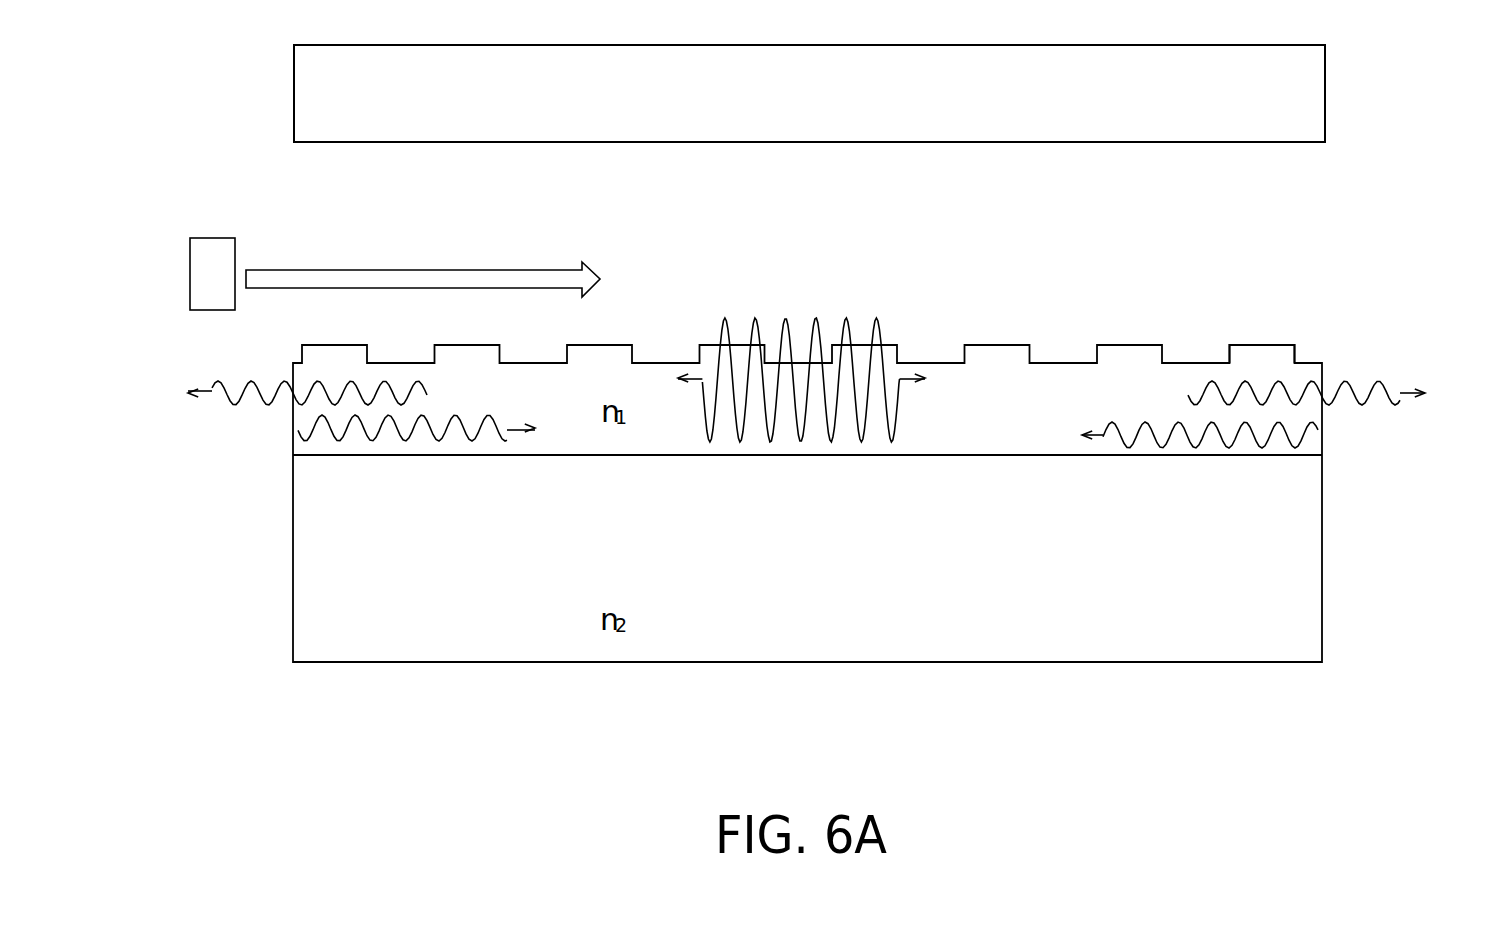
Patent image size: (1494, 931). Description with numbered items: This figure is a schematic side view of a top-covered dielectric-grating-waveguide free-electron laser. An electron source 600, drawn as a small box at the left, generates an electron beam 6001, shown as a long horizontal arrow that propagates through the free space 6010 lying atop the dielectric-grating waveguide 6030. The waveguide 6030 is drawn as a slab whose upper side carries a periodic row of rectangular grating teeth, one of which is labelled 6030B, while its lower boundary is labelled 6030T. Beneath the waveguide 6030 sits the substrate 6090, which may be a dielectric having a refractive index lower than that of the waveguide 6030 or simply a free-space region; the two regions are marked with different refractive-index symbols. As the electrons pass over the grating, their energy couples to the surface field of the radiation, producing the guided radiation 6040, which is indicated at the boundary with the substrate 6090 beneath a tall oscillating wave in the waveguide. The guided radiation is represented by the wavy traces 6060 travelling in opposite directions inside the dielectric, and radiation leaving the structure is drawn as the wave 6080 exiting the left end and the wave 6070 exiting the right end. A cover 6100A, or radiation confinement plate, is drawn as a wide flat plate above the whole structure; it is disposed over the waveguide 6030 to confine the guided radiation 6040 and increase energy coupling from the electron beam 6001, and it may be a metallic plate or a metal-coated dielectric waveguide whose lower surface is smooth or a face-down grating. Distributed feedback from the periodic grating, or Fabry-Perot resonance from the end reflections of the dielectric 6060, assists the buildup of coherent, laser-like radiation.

The electron source 600 is at (205, 248).
The electron beam 6001 is at (428, 275).
The free space 6010 is at (801, 342).
The dielectric-grating waveguide 6030 is at (1020, 430).
The grating protrusion on waveguide top surface 6030B is at (1263, 345).
The waveguide bottom surface 6030T is at (1218, 457).
The guided radiation 6040 is at (727, 443).
The dielectric 6060 is at (355, 448).
The output light 6070 is at (1365, 365).
The output light 6080 is at (235, 378).
The substrate 6090 is at (913, 615).
The cover 6100A is at (932, 116).